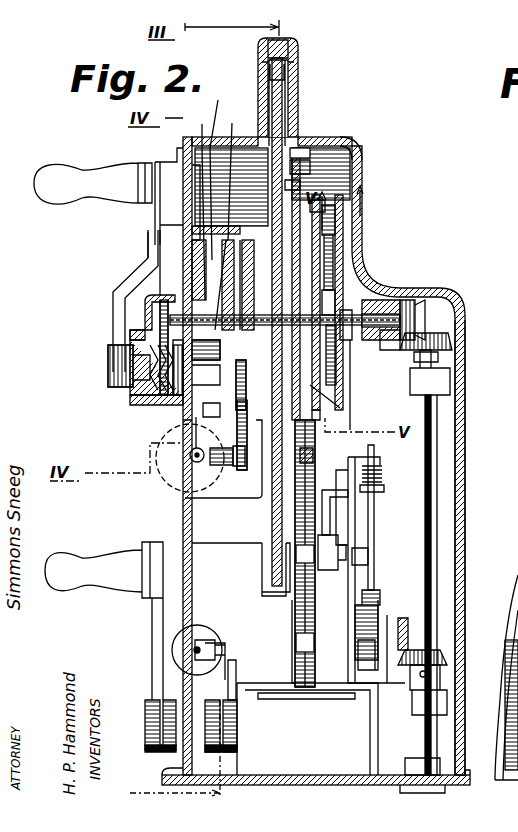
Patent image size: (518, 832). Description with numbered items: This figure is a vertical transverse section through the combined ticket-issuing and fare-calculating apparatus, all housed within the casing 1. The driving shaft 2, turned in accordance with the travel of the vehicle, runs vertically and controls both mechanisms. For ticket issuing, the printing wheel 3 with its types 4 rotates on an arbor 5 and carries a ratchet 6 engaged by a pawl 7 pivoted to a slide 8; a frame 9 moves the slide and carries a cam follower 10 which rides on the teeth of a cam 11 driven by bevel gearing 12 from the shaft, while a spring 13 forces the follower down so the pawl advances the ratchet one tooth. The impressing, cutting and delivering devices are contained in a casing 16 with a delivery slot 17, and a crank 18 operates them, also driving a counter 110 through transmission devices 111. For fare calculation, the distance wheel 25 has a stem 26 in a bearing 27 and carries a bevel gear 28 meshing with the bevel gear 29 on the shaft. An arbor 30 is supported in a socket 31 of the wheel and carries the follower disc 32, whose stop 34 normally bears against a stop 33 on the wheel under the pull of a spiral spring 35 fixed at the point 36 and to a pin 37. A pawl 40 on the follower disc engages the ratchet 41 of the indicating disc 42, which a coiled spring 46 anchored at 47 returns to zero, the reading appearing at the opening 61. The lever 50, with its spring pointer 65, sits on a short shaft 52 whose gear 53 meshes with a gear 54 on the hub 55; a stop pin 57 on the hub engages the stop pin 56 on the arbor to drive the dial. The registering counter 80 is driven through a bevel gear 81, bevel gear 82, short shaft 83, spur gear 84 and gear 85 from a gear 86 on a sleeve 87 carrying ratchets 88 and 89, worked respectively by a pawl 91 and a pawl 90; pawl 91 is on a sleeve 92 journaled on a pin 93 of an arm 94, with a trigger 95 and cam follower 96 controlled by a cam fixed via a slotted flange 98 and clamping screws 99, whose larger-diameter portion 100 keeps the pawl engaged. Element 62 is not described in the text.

The casing 1 is at (466, 498).
The driving shaft 2 is at (433, 545).
The printing wheel 3 is at (315, 603).
The types 4 is at (313, 452).
The arbor 5 is at (348, 552).
The ratchet 6 is at (380, 545).
The pawl 7 is at (327, 515).
The slide 8 is at (348, 470).
The frame 9 is at (375, 529).
The cam follower 10 is at (360, 600).
The cam 11 is at (360, 650).
The bevel gearing 12 is at (405, 618).
The spring 13 is at (382, 475).
The casing 16 is at (307, 729).
The slot 17 is at (322, 700).
The crank 18 is at (158, 612).
The distance wheel 25 is at (338, 376).
The stem 26 is at (395, 335).
The bearing 27 is at (440, 357).
The bevel gear 28 is at (430, 338).
The bevel gear 29 is at (432, 350).
The arbor 30 is at (120, 345).
The socket 31 is at (350, 340).
The follower disc 32 is at (342, 290).
The stop 33 is at (322, 232).
The stop 34 is at (344, 240).
The spiral spring 35 is at (405, 300).
The point 36 is at (376, 313).
The pin 37 is at (340, 258).
The pawl 40 is at (318, 205).
The ratchet 41 is at (322, 415).
The indicating disc 42 is at (268, 533).
The coiled spring 46 is at (295, 186).
The fixing point on casing 47 is at (300, 163).
The lever 50 is at (113, 284).
The short shaft 52 is at (112, 368).
The gear 53 is at (160, 408).
The gear 54 is at (130, 334).
The hub 55 is at (170, 295).
The stop pin 56 is at (160, 313).
The stop pin 57 is at (62, 170).
The opening 61 is at (298, 58).
The gear 62 is at (140, 390).
The spring pointer 65 is at (180, 152).
The counter 80 is at (175, 478).
The bevel gear 81 is at (211, 425).
The bevel gear 82 is at (205, 465).
The short shaft 83 is at (236, 466).
The spur gear 84 is at (232, 473).
The gear 85 is at (232, 435).
The gear 86 is at (246, 240).
The sleeve 87 is at (206, 352).
The ratchet 88 is at (206, 375).
The ratchet 89 is at (233, 385).
The pawl 90 is at (300, 190).
The pawl 91 is at (240, 148).
The sleeve 92 is at (195, 232).
The pin 93 is at (195, 252).
The arm 94 is at (148, 252).
The trigger 95 is at (196, 206).
The cam follower 96 is at (227, 221).
The slotted flange 98 is at (175, 430).
The clamping screws 99 is at (183, 202).
The portion of larger diameter 100 is at (214, 174).
The counter 110 is at (215, 624).
The transmission devices 111 is at (238, 673).